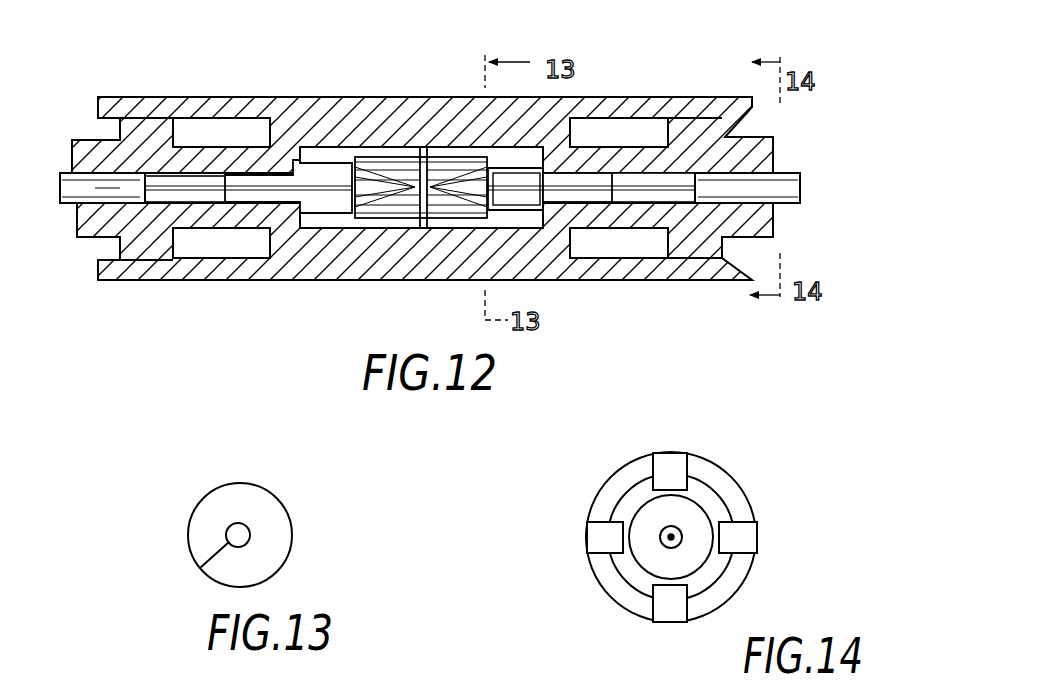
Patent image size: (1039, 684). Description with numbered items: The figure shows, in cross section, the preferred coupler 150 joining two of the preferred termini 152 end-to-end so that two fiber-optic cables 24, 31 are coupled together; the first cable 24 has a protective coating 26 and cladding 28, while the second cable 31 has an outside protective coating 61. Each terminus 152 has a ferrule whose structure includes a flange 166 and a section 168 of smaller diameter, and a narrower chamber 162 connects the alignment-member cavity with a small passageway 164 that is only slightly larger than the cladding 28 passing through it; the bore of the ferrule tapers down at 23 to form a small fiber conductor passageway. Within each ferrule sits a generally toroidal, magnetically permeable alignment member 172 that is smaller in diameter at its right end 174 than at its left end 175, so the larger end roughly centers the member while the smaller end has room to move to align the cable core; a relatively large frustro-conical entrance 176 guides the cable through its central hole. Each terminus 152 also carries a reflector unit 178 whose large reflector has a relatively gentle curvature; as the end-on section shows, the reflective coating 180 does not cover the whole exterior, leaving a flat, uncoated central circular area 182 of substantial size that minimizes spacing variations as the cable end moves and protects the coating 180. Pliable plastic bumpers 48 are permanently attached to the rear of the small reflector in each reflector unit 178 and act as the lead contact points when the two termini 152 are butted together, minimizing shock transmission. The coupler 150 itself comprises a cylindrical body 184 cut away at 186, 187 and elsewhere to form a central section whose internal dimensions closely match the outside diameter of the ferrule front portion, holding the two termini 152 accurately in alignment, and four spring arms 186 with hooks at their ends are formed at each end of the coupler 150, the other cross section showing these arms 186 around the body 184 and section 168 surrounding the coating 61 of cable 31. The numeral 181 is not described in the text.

In FIG. 12, the coupler 150 is at (189, 87).
In FIG. 12, the terminus 152 is at (224, 128).
In FIG. 12, the housing bore 181 is at (320, 97).
In FIG. 12, the frustro-conical entrance 176 is at (312, 160).
In FIG. 12, the reflector unit 178 is at (460, 147).
In FIG. 13, the reflector unit 178 is at (275, 570).
In FIG. 12, the cut away 187 is at (570, 167).
In FIG. 12, the spring arms 186 is at (118, 118).
In FIG. 14, the spring arms 186 is at (668, 460).
In FIG. 12, the cylindrical body 184 is at (627, 280).
In FIG. 14, the cylindrical body 184 is at (598, 585).
In FIG. 12, the section of smaller diameter 168 is at (108, 250).
In FIG. 14, the section of smaller diameter 168 is at (712, 567).
In FIG. 12, the flange 166 is at (180, 280).
In FIG. 12, the small passageway 164 is at (421, 243).
In FIG. 12, the chamber 162 is at (251, 245).
In FIG. 12, the cladding 28 is at (420, 132).
In FIG. 12, the taper 23 is at (444, 134).
In FIG. 12, the cable 24 is at (51, 188).
In FIG. 12, the protective coating 26 is at (72, 205).
In FIG. 12, the cable 31 is at (799, 162).
In FIG. 12, the outside protective coating 61 is at (800, 203).
In FIG. 14, the outside protective coating 61 is at (664, 546).
In FIG. 12, the magnetically permeable alignment member 172 is at (317, 203).
In FIG. 12, the left end 175 is at (293, 202).
In FIG. 12, the right end 174 is at (353, 215).
In FIG. 12, the bumpers 48 is at (435, 197).
In FIG. 13, the reflective coating 180 is at (215, 508).
In FIG. 13, the central circular area 182 is at (200, 568).